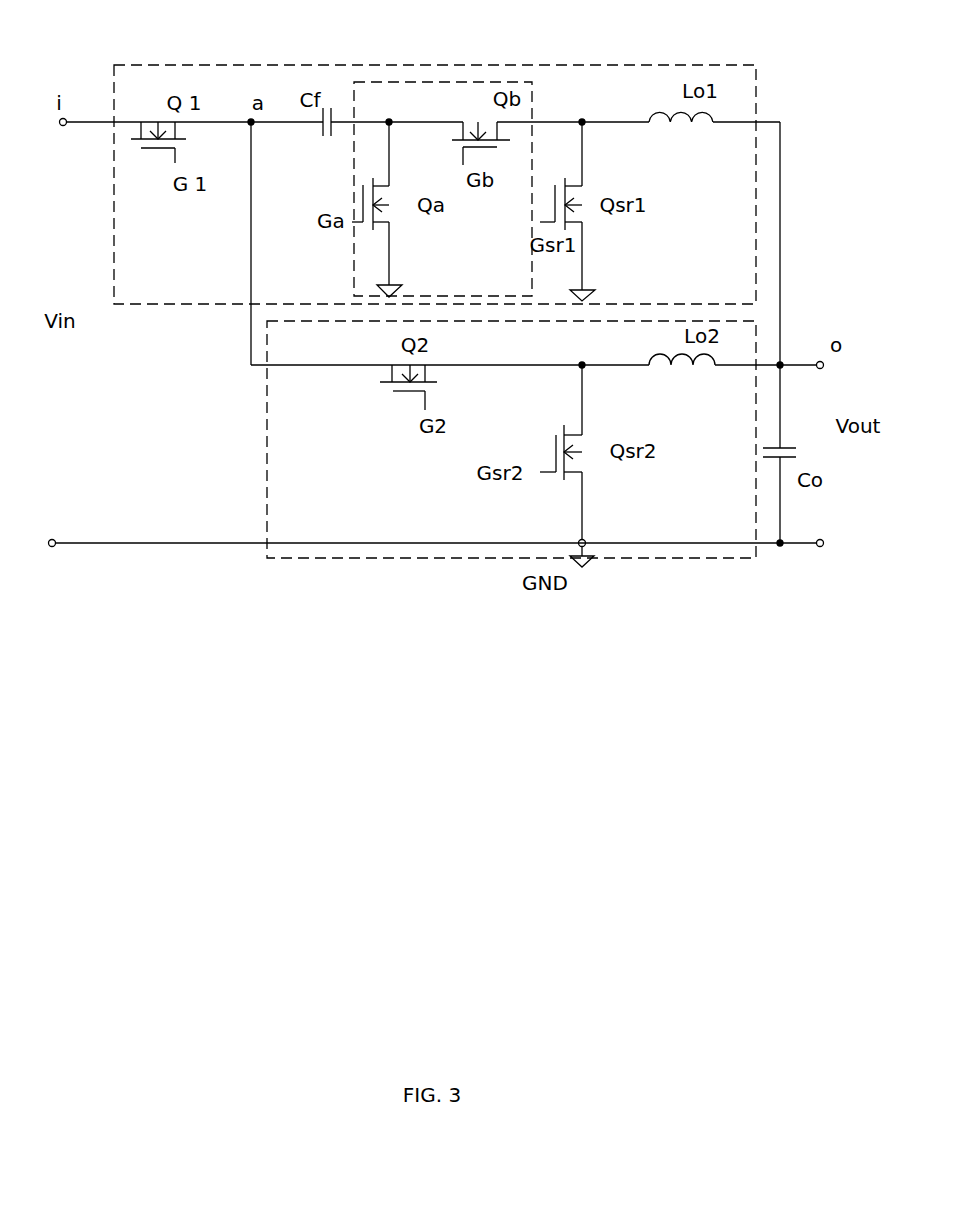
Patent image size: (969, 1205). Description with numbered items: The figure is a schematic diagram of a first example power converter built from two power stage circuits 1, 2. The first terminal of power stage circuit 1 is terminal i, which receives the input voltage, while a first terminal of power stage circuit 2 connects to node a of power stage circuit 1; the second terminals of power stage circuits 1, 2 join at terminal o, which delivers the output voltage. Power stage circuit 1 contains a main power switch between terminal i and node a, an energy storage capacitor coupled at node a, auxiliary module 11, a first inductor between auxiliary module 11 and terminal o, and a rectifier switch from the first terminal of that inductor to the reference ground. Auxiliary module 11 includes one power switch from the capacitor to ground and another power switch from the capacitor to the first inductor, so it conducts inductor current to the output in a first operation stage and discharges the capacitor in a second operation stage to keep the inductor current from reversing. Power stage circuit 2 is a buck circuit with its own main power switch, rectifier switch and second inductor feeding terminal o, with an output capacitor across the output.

The power stage circuit 1 is at (715, 63).
The auxiliary module 11 is at (533, 110).
The power stage circuit 2 is at (723, 565).